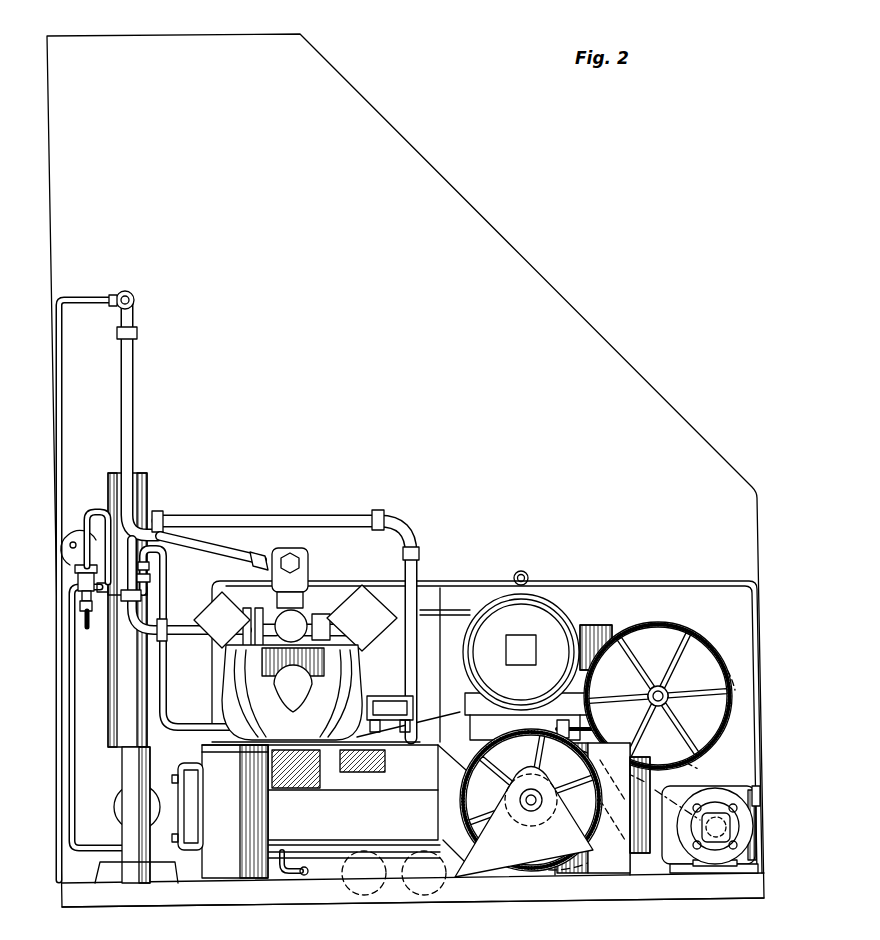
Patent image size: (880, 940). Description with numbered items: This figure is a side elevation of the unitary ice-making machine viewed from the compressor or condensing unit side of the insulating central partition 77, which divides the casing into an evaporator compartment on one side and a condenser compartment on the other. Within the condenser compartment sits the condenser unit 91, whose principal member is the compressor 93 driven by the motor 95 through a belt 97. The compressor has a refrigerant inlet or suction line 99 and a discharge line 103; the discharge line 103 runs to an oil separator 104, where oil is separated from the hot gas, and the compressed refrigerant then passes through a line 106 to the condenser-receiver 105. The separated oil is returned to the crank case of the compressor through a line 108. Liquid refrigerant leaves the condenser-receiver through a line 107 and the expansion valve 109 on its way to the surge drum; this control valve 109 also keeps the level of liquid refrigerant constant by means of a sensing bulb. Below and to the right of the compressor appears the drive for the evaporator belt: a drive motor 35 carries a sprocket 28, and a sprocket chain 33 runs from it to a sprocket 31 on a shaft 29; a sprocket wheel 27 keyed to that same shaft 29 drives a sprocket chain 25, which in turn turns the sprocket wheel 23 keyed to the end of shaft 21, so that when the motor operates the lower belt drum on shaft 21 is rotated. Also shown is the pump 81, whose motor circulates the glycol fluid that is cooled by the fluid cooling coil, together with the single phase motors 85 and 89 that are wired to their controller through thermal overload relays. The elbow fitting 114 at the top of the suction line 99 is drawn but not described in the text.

The central partition 77 is at (353, 266).
The pipe elbow 114 is at (93, 297).
The refrigerant inlet or suction line 99 is at (134, 386).
The condenser unit 91 is at (344, 495).
The line 106 is at (415, 522).
The expansion valve 109 is at (74, 577).
The line 108 is at (167, 568).
The discharge line 103 is at (216, 552).
The belt 97 is at (452, 610).
The motor 95 is at (552, 604).
The sprocket chain 25 is at (630, 612).
The sprocket wheel 23 is at (658, 683).
The shaft 21 is at (669, 688).
The oil separator 104 is at (118, 668).
The line 107 is at (78, 712).
The condenser-receiver 105 is at (192, 768).
The compressor 93 is at (311, 730).
The pump 81 is at (113, 792).
The sprocket 31 is at (450, 808).
The shaft 29 is at (522, 802).
The sprocket wheel 27 is at (548, 806).
The sprocket 28 is at (728, 808).
The drive motor 35 is at (758, 794).
The motor 89 is at (366, 875).
The motor 85 is at (428, 875).
The sprocket chain 33 is at (664, 852).